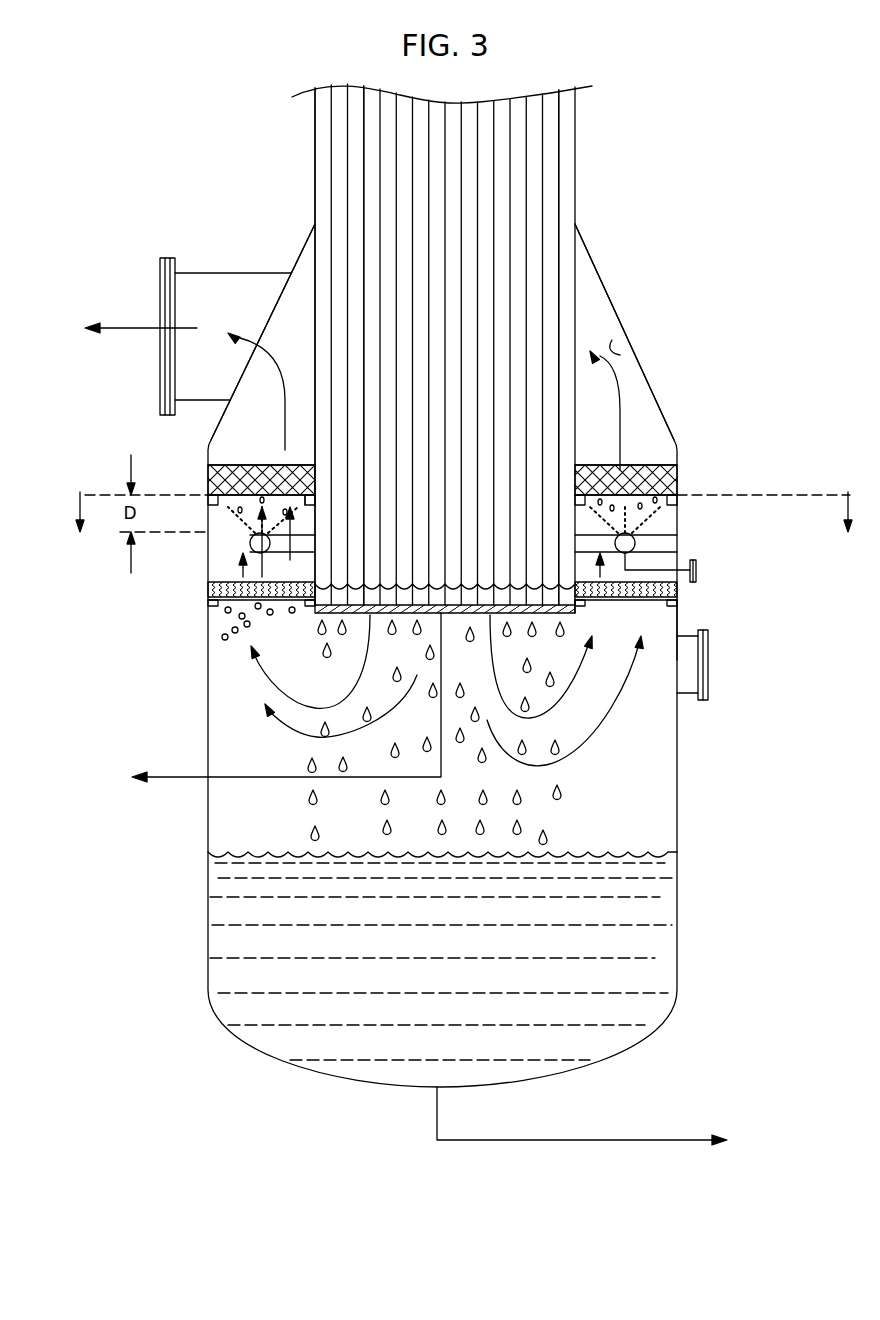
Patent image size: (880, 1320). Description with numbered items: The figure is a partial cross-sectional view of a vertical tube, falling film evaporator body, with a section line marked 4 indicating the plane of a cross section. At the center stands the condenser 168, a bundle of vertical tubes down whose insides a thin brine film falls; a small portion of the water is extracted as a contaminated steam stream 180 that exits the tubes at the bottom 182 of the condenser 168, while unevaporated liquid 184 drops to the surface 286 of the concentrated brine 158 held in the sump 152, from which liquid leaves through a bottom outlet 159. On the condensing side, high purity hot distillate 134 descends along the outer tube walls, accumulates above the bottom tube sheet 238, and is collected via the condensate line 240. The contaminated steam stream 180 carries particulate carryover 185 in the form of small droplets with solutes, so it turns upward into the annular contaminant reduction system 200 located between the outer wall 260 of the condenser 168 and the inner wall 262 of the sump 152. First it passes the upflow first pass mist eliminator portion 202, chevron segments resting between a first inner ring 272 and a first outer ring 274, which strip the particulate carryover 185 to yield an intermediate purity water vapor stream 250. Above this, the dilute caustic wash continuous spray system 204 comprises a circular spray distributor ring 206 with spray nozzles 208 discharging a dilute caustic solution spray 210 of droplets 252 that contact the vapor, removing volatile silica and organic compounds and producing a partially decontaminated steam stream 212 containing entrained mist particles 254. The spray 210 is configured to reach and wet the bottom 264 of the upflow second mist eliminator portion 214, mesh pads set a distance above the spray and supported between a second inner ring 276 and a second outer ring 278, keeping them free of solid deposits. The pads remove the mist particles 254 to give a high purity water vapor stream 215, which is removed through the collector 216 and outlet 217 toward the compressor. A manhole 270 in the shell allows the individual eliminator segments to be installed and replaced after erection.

The sump 152 is at (672, 1000).
The concentrated brine 158 is at (612, 968).
The liquid outlet 159 is at (612, 1140).
The condenser 168 is at (577, 157).
The high purity hot distillate 134 is at (505, 590).
The bottom of condenser 182 is at (318, 617).
The bottom tube sheet 238 is at (368, 617).
The contaminated steam stream 180 is at (262, 672).
The unevaporated liquid 184 is at (310, 800).
The particulate carryover 185 is at (212, 636).
The contaminant reduction system 200 is at (491, 561).
The upflow first pass mist eliminator portion 202 is at (677, 592).
The dilute caustic wash continuous spray system 204 is at (640, 543).
The spray distributor ring 206 is at (697, 568).
The spray nozzles 208 is at (258, 575).
The dilute caustic solution spray 210 is at (665, 502).
The partially decontaminated steam stream 212 is at (302, 605).
The upflow second mist eliminator portion 214 is at (665, 480).
The high purity water vapor stream 215 is at (140, 327).
The collector 216 is at (637, 350).
The outlet 217 is at (213, 273).
The condensate line 240 is at (200, 745).
The intermediate purity water vapor stream 250 is at (212, 595).
The droplets of dilute caustic solution 252 is at (280, 528).
The entrained mist particles 254 is at (252, 488).
The outer wall 260 is at (577, 283).
The inner wall 262 is at (683, 462).
The bottom of upflow upper mist eliminators 264 is at (212, 467).
The manhole 270 is at (708, 680).
The first inner ring 272 is at (588, 608).
The first outer ring 274 is at (680, 607).
The second inner ring 276 is at (308, 510).
The second outer ring 278 is at (220, 500).
The surface of concentrated brine 286 is at (655, 848).
The section line 4- 4 is at (463, 502).